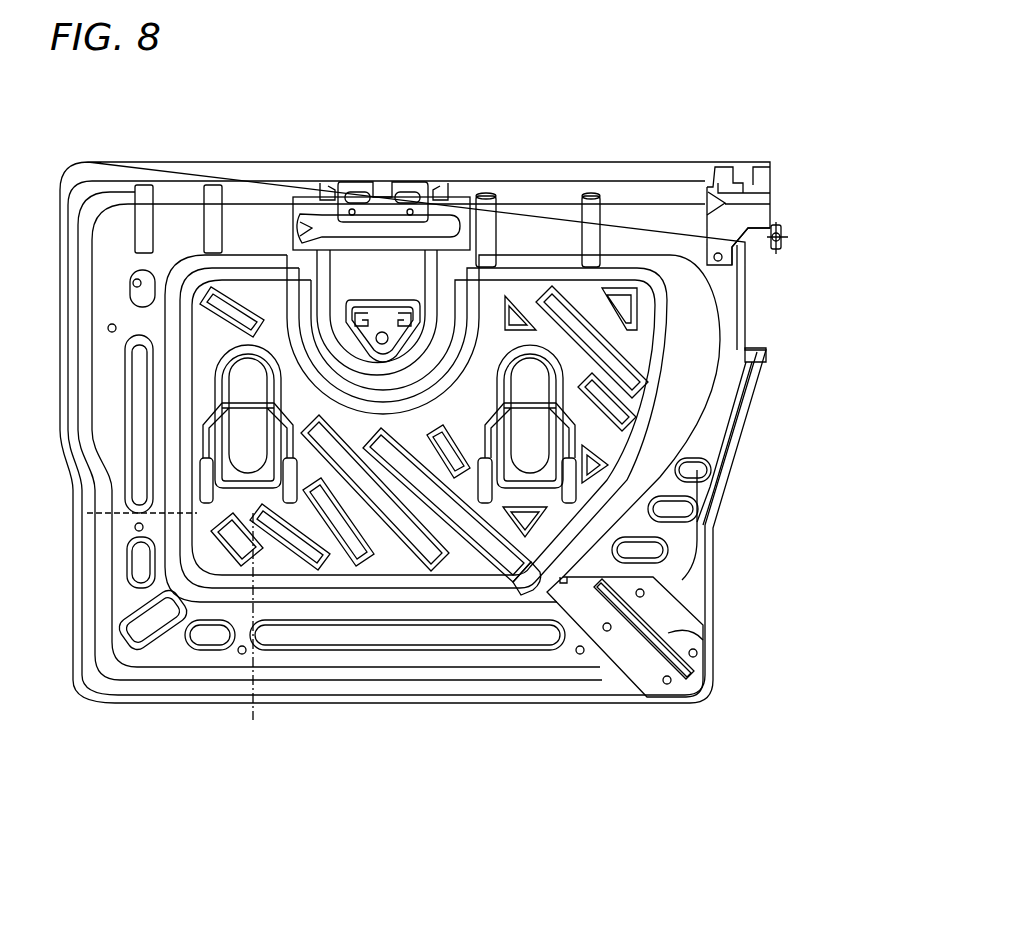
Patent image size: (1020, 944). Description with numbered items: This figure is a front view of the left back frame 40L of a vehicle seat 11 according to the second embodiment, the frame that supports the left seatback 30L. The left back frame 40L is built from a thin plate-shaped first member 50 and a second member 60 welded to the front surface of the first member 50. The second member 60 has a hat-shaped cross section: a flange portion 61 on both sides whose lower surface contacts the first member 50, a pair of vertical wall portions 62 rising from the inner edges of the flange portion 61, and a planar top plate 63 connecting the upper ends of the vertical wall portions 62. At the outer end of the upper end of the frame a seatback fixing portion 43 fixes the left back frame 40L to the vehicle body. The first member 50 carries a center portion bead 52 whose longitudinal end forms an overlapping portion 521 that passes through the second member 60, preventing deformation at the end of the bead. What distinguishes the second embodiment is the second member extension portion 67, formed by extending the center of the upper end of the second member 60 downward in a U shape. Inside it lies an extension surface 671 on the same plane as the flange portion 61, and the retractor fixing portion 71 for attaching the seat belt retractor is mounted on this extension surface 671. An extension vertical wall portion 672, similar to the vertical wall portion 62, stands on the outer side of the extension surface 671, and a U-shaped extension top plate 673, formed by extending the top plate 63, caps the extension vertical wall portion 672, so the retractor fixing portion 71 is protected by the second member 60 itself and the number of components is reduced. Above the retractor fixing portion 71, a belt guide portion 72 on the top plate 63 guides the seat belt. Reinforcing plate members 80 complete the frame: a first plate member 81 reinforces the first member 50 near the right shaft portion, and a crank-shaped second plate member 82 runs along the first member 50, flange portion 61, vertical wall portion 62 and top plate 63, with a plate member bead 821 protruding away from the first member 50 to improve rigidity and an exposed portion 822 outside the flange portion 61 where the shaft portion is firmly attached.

The vehicle seat 11 is at (763, 95).
The seatback 30L is at (437, 92).
The left back frame 40L is at (327, 123).
The seatback fixing portion 43 is at (782, 212).
The first member 50 is at (83, 158).
The center portion bead 52 is at (487, 555).
The overlapping portion 521 is at (523, 578).
The second member 60 is at (168, 188).
The flange portion 61 is at (705, 497).
The vertical wall portion 62 is at (737, 380).
The top plate 63 is at (653, 223).
The second member extension portion 67 is at (480, 378).
The extension surface 671 is at (348, 275).
The extension vertical wall portion 672 is at (447, 270).
The extension top plate 673 is at (443, 350).
The retractor fixing portion 71 is at (381, 308).
The belt guide portion 72 is at (355, 185).
The plate member 80 is at (549, 661).
The first plate member 81 is at (259, 660).
The second plate member 82 is at (707, 620).
The plate member bead 821 is at (700, 650).
The exposed portion 822 is at (650, 683).